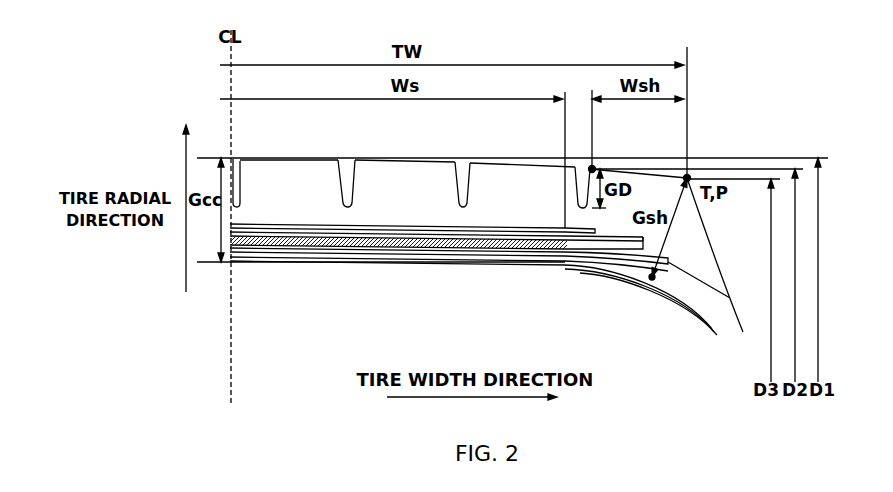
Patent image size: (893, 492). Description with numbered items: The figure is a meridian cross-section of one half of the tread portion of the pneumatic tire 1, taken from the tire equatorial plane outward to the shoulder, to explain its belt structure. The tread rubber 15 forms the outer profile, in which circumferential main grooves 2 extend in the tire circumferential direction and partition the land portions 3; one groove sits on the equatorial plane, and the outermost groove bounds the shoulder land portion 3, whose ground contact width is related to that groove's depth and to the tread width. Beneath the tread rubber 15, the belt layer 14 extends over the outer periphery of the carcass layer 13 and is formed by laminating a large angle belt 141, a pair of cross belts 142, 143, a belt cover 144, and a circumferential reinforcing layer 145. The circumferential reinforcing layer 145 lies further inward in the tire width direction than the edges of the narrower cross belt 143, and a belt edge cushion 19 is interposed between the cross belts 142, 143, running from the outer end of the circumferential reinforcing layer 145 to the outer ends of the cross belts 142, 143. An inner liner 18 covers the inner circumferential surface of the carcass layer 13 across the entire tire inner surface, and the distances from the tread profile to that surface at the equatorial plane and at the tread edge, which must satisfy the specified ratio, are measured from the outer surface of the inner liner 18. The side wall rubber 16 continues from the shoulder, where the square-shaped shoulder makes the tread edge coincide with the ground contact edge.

The pneumatic tire 1 is at (722, 97).
The circumferential main groove 2 is at (240, 160).
The land portion 3 is at (290, 158).
The carcass layer 13 is at (690, 307).
The belt layer 14 is at (449, 286).
The large angle belt 141 is at (312, 309).
The cross belt 142 is at (460, 251).
The cross belt 143 is at (418, 247).
The belt cover 144 is at (372, 237).
The circumferential reinforcing layer 145 is at (330, 245).
The tread rubber 15 is at (657, 160).
The side wall rubber 16 is at (720, 302).
The inner liner 18 is at (545, 267).
The belt edge cushion 19 is at (616, 271).